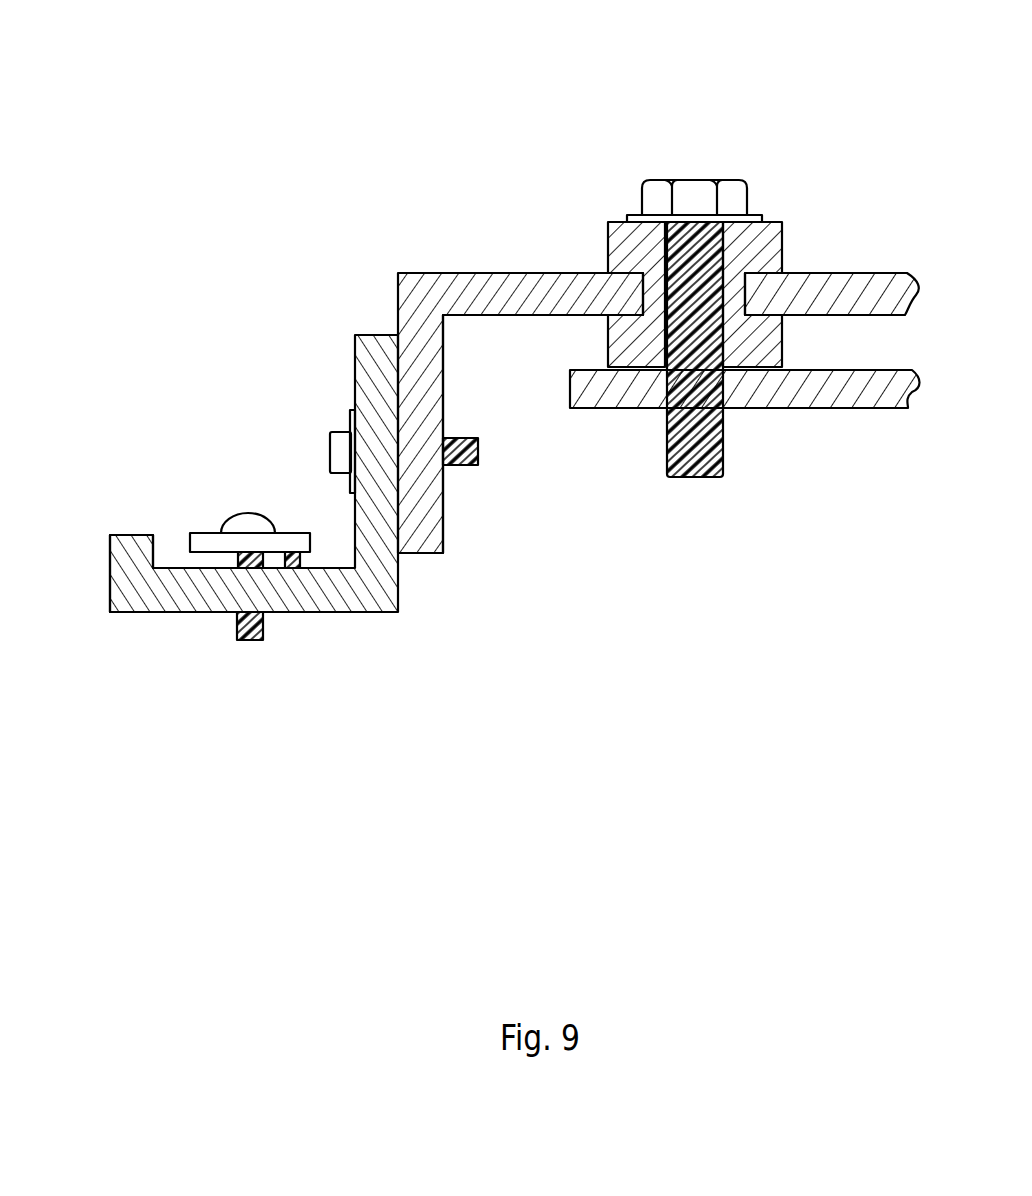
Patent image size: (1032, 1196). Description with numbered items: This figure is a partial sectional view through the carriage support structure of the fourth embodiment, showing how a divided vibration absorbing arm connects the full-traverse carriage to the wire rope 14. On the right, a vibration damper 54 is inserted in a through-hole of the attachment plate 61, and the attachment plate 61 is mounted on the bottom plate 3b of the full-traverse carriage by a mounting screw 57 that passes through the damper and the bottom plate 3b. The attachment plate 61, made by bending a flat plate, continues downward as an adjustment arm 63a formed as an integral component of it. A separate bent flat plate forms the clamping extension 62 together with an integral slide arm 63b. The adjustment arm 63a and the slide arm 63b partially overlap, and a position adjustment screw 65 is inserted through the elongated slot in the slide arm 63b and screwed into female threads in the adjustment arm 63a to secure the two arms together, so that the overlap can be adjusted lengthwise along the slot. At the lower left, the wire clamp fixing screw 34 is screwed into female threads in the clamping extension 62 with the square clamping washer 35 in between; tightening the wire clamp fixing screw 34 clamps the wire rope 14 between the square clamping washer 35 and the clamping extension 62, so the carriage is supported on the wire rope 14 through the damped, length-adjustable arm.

The bottom plate 3b is at (843, 397).
The wire rope 14 is at (330, 610).
The wire clamp fixing screw 34 is at (252, 520).
The square clamping washer 35 is at (193, 530).
The vibration damper 54 is at (785, 227).
The mounting screw 57 is at (698, 190).
The attachment plate 61 is at (500, 281).
The clamping extension 62 is at (153, 600).
The adjustment arm 63a is at (445, 520).
The slide arm 63b is at (353, 500).
The position adjustment screw 65 is at (350, 462).